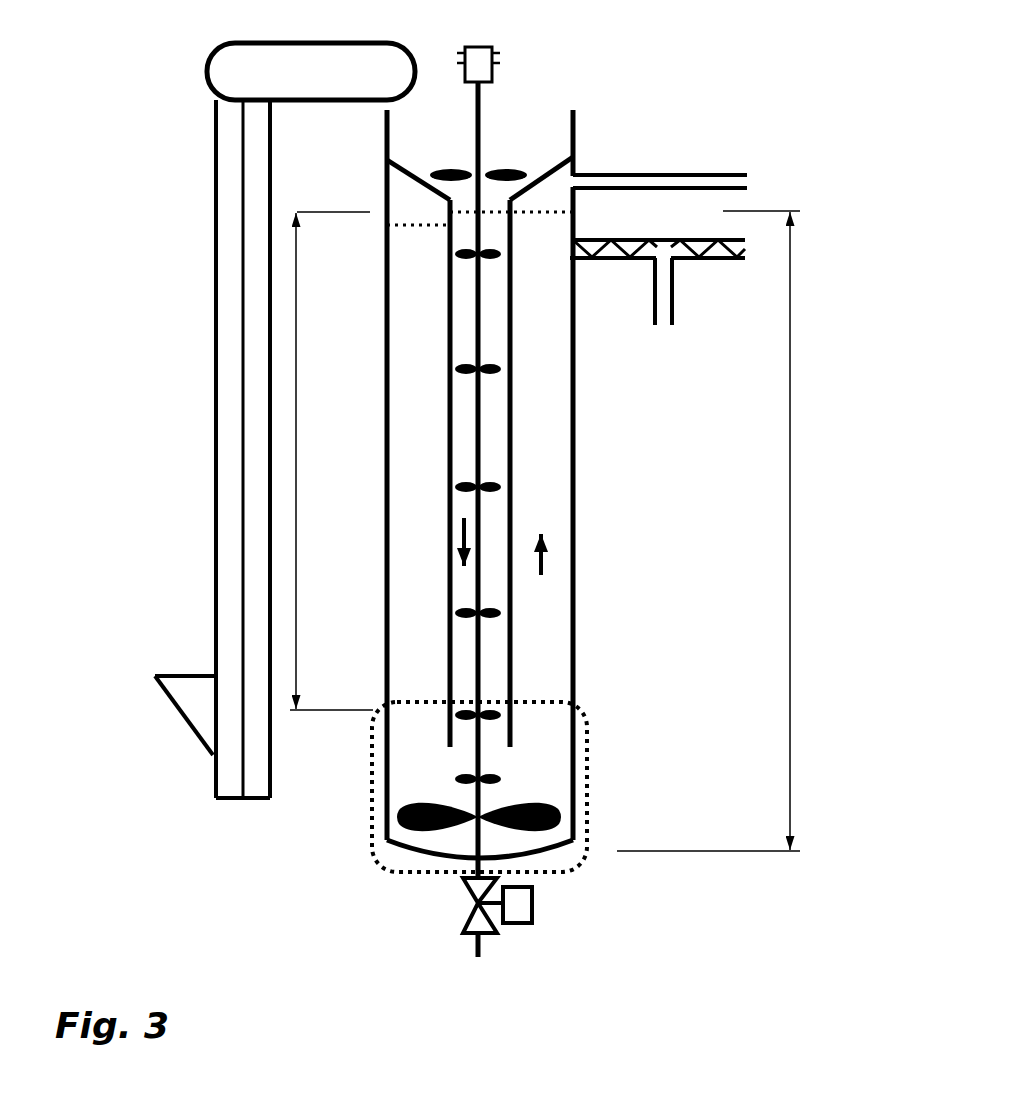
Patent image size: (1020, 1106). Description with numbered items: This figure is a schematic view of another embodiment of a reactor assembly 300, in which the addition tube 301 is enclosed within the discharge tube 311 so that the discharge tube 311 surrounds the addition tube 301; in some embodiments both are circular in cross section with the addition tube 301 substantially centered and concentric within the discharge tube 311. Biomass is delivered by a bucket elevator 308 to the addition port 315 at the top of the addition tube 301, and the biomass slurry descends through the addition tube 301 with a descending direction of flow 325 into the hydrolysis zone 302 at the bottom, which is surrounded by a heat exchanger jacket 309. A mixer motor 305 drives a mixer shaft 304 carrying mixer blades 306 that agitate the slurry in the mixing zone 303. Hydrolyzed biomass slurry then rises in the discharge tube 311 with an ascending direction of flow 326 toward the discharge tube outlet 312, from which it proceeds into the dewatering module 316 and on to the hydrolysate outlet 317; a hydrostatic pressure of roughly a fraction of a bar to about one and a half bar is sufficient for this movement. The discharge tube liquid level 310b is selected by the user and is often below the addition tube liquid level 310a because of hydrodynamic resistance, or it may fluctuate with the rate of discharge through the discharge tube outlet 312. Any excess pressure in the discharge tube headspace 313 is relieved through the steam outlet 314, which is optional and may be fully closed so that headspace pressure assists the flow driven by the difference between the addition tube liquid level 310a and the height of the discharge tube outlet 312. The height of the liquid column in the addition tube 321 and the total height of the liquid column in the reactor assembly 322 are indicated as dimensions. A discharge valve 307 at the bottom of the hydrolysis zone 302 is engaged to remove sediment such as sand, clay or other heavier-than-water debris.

The reactor assembly 300 is at (778, 86).
The addition tube 301 is at (448, 353).
The hydrolysis zone 302 is at (377, 836).
The mixing zone 303 is at (440, 140).
The mixer shaft 304 is at (488, 642).
The mixer motor 305 is at (496, 44).
The mixer blades 306 is at (533, 800).
The discharge valve 307 is at (470, 903).
The bucket elevator 308 is at (197, 674).
The heat exchanger jacket 309 is at (590, 815).
The addition tube liquid level 310a is at (467, 218).
The discharge tube liquid level 310b is at (531, 233).
The discharge tube 311 is at (577, 386).
The discharge tube outlet 312 is at (580, 235).
The discharge tube headspace 313 is at (546, 201).
The steam outlet 314 is at (580, 169).
The addition port 315 is at (432, 101).
The dewatering module 316 is at (628, 263).
The hydrolysate outlet 317 is at (676, 265).
The height of liquid column in addition tube 321 is at (331, 461).
The total height of liquid column in reactor assembly 322 is at (729, 531).
The direction of flow in addition tube 325 is at (460, 550).
The direction of flow in discharge tube 326 is at (545, 548).